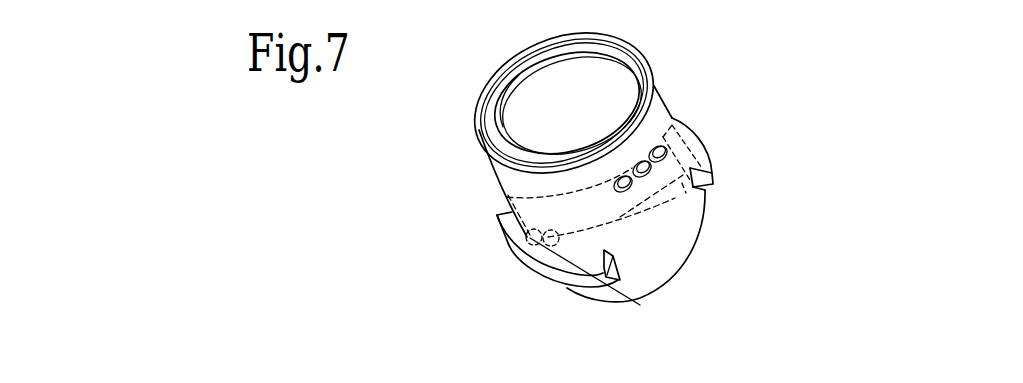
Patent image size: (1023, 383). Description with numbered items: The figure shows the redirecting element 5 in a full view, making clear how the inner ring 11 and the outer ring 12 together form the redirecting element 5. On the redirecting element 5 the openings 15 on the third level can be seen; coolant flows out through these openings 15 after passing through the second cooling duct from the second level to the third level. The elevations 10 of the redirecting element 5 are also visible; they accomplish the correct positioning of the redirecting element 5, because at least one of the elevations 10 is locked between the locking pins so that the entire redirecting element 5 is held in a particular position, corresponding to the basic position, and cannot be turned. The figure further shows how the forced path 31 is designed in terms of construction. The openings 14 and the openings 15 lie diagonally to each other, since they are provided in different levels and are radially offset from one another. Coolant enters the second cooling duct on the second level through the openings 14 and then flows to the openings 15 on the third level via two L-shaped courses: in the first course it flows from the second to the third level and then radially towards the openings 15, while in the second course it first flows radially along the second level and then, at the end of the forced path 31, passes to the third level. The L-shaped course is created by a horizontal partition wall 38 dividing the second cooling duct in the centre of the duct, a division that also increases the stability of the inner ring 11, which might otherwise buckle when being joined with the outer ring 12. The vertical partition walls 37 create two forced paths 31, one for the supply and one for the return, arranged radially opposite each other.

The redirecting element 5 is at (845, 194).
The elevations 10 is at (540, 270).
The inner ring 11 is at (667, 273).
The outer ring 12 is at (518, 73).
The openings 14 is at (551, 241).
The openings 15 is at (631, 182).
The forced path 31 is at (600, 227).
The vertical partition walls 37 is at (680, 137).
The horizontal partition wall 38 is at (600, 211).